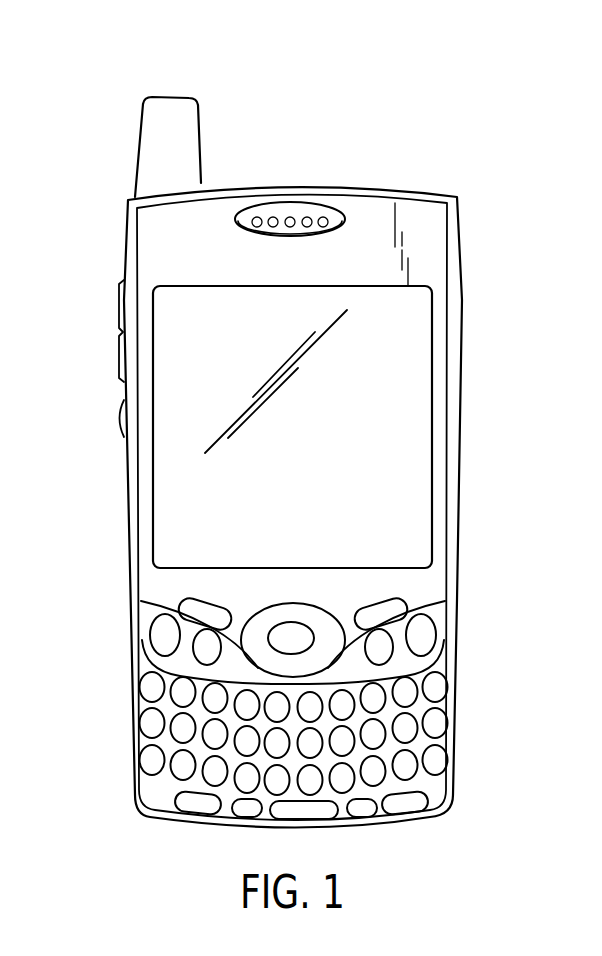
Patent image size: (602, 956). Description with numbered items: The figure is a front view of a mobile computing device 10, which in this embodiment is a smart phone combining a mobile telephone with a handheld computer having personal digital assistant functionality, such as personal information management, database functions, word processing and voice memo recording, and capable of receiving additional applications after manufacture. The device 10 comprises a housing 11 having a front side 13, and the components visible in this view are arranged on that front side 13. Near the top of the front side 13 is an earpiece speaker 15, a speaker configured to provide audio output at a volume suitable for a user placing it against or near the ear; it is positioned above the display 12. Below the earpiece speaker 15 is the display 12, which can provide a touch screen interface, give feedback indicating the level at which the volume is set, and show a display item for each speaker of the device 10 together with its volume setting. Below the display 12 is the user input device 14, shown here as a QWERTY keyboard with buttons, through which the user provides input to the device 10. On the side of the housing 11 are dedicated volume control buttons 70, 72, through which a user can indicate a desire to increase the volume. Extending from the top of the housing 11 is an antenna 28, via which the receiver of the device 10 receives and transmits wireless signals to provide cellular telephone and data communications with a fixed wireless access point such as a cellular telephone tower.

The mobile computing device 10 is at (408, 102).
The housing 11 is at (433, 222).
The display 12 is at (413, 383).
The front side 13 is at (192, 257).
The user input device 14 is at (437, 722).
The earpiece speaker 15 is at (292, 221).
The antenna 28 is at (197, 135).
The volume control button 70 is at (121, 312).
The volume control button 72 is at (119, 424).